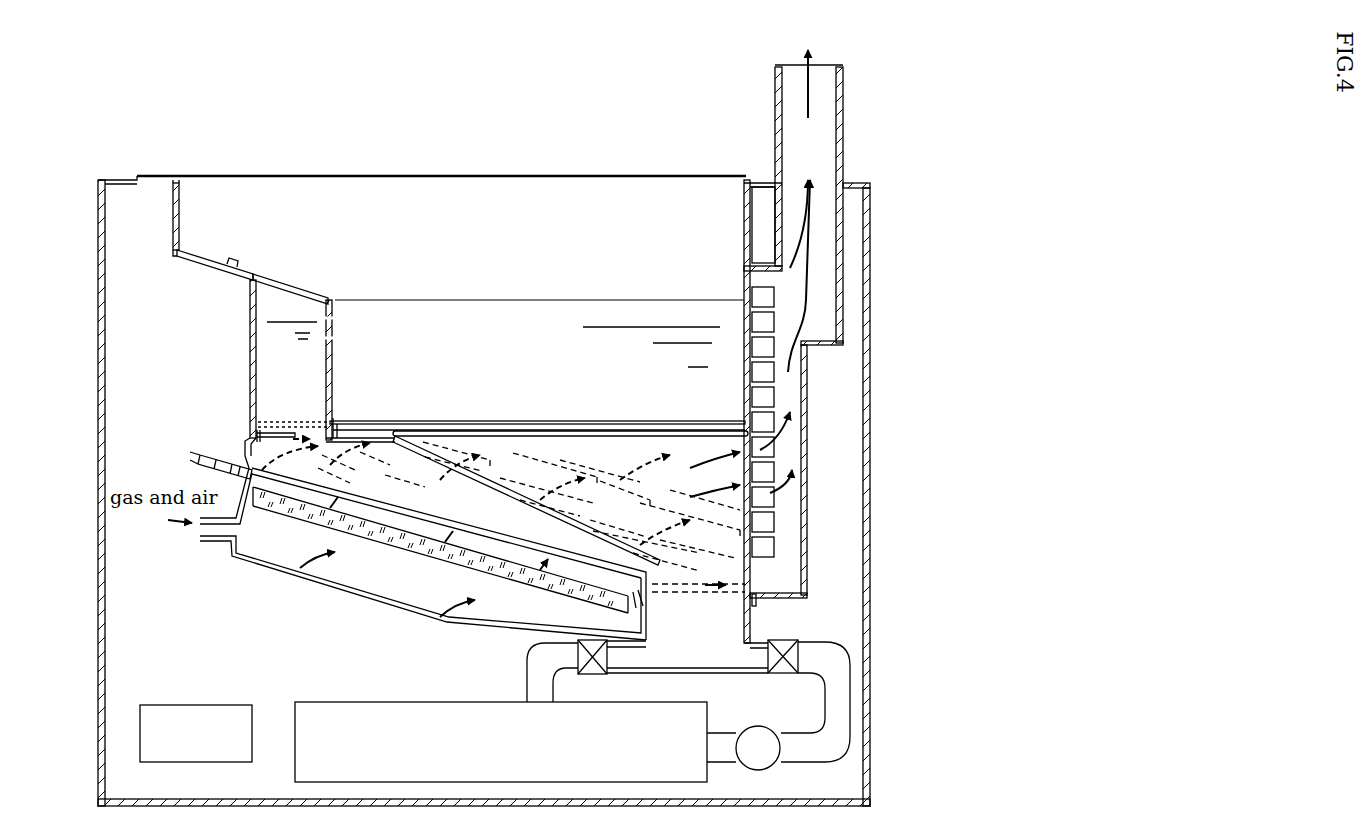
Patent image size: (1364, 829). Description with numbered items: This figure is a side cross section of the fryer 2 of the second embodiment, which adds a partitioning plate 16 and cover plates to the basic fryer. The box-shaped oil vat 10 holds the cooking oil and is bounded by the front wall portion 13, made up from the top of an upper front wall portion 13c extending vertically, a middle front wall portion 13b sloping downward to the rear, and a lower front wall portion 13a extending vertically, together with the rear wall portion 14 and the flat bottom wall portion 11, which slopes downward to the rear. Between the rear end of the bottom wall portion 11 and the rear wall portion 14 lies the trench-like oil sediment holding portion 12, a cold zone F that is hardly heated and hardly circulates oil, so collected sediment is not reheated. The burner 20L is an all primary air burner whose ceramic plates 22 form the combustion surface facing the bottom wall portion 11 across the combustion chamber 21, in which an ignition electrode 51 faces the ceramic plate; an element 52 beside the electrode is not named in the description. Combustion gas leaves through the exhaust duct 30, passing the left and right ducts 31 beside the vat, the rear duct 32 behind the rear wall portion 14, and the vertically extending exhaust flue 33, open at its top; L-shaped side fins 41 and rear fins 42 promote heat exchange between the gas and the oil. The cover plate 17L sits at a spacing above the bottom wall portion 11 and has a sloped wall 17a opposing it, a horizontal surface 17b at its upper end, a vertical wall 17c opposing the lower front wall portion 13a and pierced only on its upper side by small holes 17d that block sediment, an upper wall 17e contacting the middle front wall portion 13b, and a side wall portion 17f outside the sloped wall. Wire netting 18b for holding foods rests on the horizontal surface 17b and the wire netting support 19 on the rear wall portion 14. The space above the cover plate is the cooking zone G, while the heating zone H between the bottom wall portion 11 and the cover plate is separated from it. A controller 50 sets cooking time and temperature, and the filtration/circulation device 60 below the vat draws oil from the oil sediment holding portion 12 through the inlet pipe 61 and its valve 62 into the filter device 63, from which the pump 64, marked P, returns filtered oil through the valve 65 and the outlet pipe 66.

The fryer 2 is at (480, 160).
The oil vat 10 is at (168, 199).
The bottom wall portion 11 is at (377, 507).
The oil sediment holding portion 12 is at (760, 618).
The front wall portion 13 is at (216, 354).
The lower front wall portion 13a is at (248, 345).
The middle front wall portion 13b is at (213, 262).
The upper front wall portion 13c is at (173, 240).
The rear wall portion 14 is at (760, 218).
The partitioning plate 16 is at (635, 210).
The cover plate 17L is at (537, 446).
The sloped wall 17a is at (452, 420).
The horizontal surface 17b is at (335, 440).
The vertical wall 17c is at (342, 387).
The holes 17d is at (333, 306).
The upper wall 17e is at (287, 283).
The side wall portion 17f is at (683, 552).
The wire netting 18b is at (608, 420).
The wire netting support 19 is at (666, 488).
The burner 20L is at (407, 554).
The combustion chamber 21 is at (410, 522).
The ceramic plates 22 is at (512, 556).
The exhaust duct 30 is at (818, 375).
The left and right ducts 31 is at (303, 423).
The rear duct 32 is at (805, 486).
The exhaust flue 33 is at (844, 118).
The side fins 41 is at (520, 420).
The rear fins 42 is at (768, 538).
The controller 50 is at (224, 705).
The ignition electrode 51 is at (198, 455).
The flame plate 52 is at (278, 428).
The filtration/circulation device 60 is at (572, 711).
The inlet pipe 61 is at (638, 645).
The valve 62 is at (592, 673).
The filter device 63 is at (385, 655).
The pump 64 is at (748, 727).
The valve 65 is at (790, 674).
The outlet pipe 66 is at (762, 675).
The pump P is at (758, 748).
The cooking zone G is at (606, 377).
The heating zone H is at (306, 464).
The cold zone F is at (716, 643).